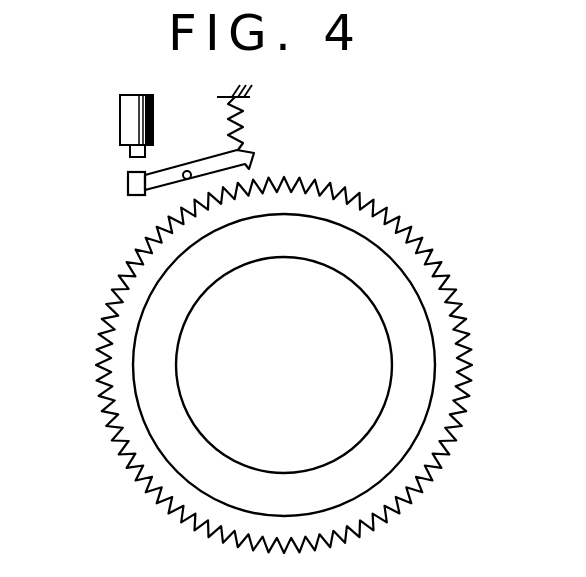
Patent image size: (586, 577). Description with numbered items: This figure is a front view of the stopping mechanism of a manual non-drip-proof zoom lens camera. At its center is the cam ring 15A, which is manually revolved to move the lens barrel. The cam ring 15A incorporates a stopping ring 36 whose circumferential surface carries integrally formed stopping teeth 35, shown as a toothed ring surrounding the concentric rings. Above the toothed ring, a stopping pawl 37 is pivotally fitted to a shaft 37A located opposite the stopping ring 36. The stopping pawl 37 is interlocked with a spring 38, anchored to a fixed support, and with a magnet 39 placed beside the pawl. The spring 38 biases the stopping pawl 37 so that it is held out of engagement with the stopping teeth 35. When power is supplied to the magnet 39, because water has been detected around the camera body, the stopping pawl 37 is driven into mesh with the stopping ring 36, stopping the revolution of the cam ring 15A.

The cam ring 15A is at (433, 367).
The stopping teeth 35 is at (368, 193).
The stopping ring 36 is at (420, 276).
The stopping pawl 37 is at (257, 156).
The shaft 37A is at (186, 171).
The spring 38 is at (243, 113).
The magnet 39 is at (120, 132).